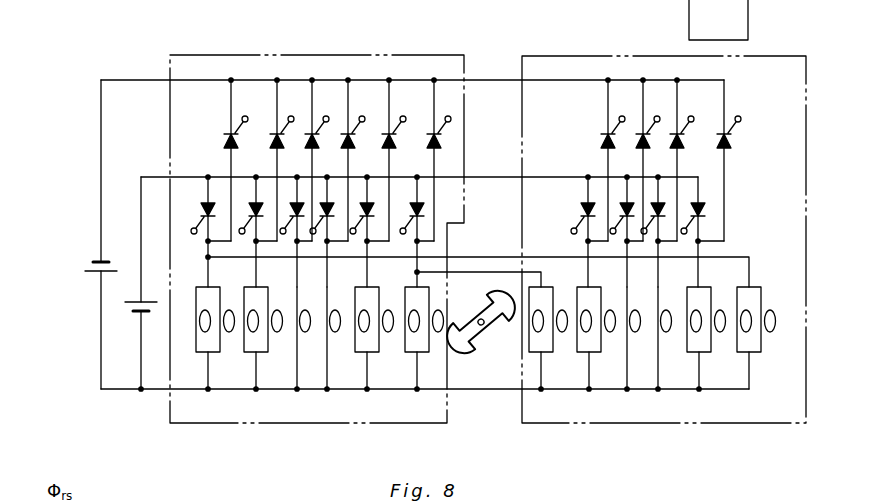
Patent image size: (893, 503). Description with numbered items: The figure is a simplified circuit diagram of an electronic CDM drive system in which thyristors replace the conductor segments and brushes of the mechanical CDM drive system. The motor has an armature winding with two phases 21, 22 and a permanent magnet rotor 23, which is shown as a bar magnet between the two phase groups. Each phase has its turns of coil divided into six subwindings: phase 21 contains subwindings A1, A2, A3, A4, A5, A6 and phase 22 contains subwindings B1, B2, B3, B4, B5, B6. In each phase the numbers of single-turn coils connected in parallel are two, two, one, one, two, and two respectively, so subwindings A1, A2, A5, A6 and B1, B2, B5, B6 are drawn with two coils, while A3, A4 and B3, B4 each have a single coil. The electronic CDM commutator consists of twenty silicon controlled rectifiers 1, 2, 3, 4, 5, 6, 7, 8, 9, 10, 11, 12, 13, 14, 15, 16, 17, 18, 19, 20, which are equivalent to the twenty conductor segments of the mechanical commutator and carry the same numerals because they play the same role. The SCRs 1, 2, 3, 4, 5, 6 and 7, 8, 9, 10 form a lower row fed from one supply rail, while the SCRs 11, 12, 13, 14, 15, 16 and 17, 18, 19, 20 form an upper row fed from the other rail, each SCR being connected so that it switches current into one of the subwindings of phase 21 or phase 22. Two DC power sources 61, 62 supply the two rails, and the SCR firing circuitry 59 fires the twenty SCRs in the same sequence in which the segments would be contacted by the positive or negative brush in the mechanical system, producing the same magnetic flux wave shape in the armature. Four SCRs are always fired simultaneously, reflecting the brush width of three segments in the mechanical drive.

The silicon controlled rectifier 1 is at (204, 204).
The silicon controlled rectifier 2 is at (252, 191).
The silicon controlled rectifier 3 is at (292, 191).
The silicon controlled rectifier 4 is at (322, 191).
The silicon controlled rectifier 5 is at (362, 191).
The silicon controlled rectifier 6 is at (410, 191).
The silicon controlled rectifier 7 is at (584, 204).
The silicon controlled rectifier 8 is at (622, 204).
The silicon controlled rectifier 9 is at (652, 191).
The silicon controlled rectifier 10 is at (693, 213).
The silicon controlled rectifier 11 is at (224, 141).
The silicon controlled rectifier 12 is at (270, 141).
The silicon controlled rectifier 13 is at (305, 141).
The silicon controlled rectifier 14 is at (341, 141).
The silicon controlled rectifier 15 is at (382, 141).
The silicon controlled rectifier 16 is at (427, 141).
The silicon controlled rectifier 17 is at (601, 141).
The silicon controlled rectifier 18 is at (636, 141).
The silicon controlled rectifier 19 is at (670, 141).
The silicon controlled rectifier 20 is at (717, 141).
The phase 21 is at (312, 412).
The phase 22 is at (622, 412).
The permanent magnet rotor 23 is at (488, 337).
The SCR firing circuitry 59 is at (689, 13).
The DC power source 61 is at (99, 277).
The DC power source 62 is at (130, 313).
The subwinding A1 is at (205, 344).
The subwinding A2 is at (248, 341).
The subwinding A3 is at (293, 338).
The subwinding A4 is at (323, 338).
The subwinding A5 is at (356, 341).
The subwinding A6 is at (407, 341).
The subwinding B1 is at (565, 342).
The subwinding B2 is at (610, 340).
The subwinding B3 is at (642, 337).
The subwinding B4 is at (673, 335).
The subwinding B5 is at (720, 340).
The subwinding B6 is at (771, 340).